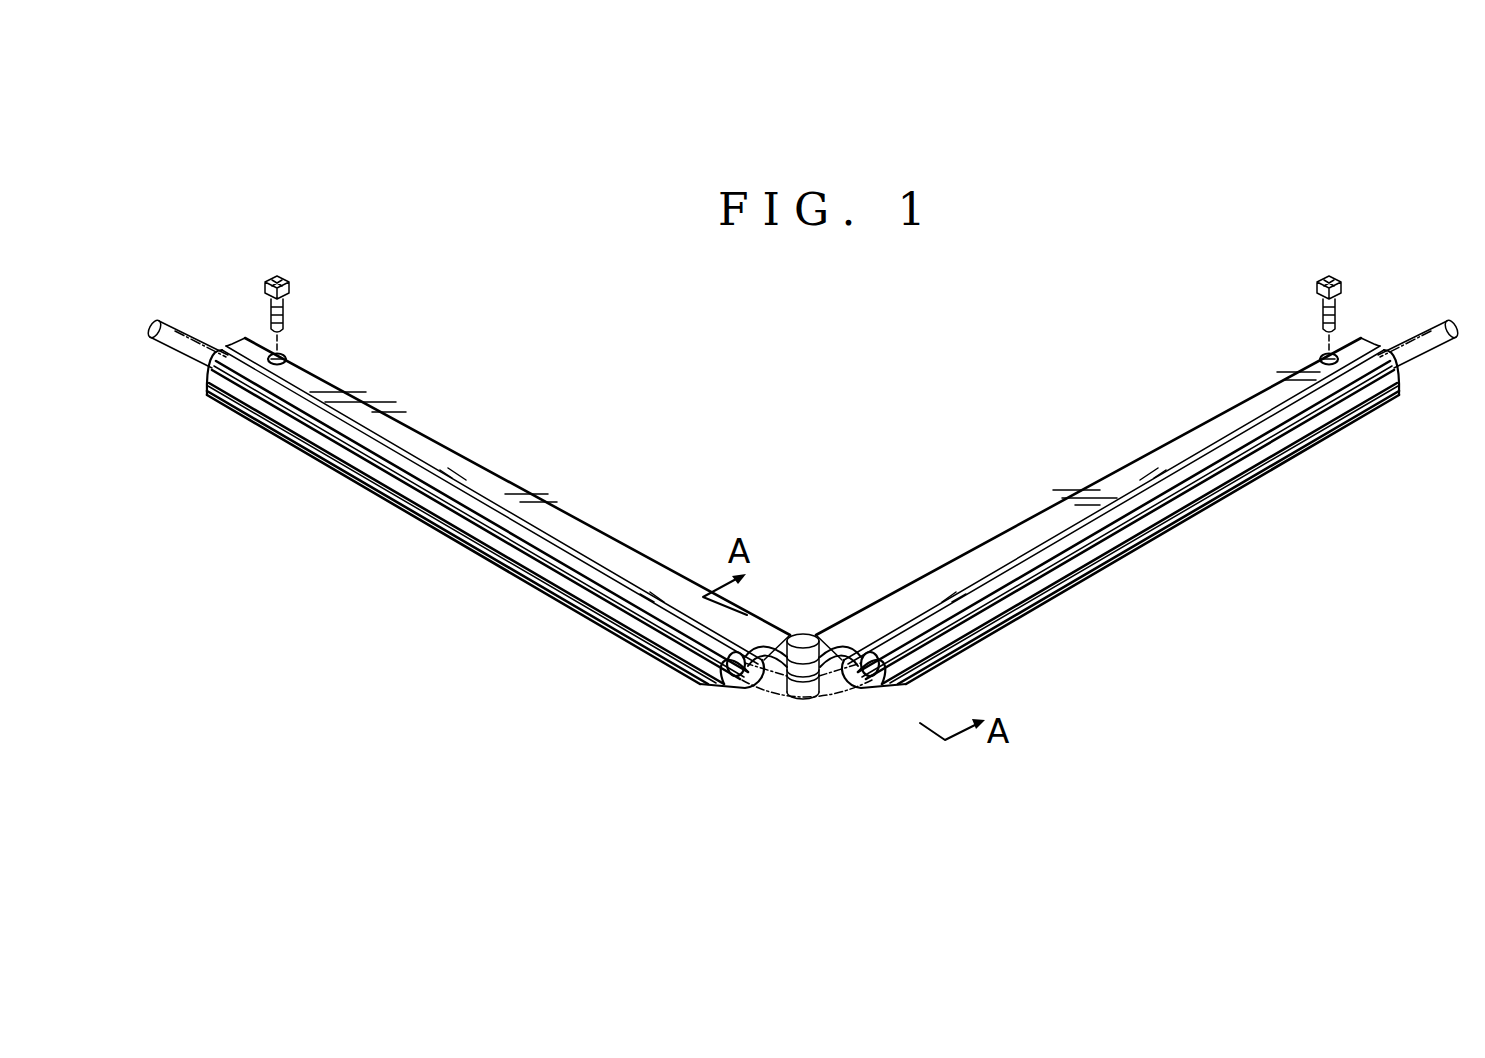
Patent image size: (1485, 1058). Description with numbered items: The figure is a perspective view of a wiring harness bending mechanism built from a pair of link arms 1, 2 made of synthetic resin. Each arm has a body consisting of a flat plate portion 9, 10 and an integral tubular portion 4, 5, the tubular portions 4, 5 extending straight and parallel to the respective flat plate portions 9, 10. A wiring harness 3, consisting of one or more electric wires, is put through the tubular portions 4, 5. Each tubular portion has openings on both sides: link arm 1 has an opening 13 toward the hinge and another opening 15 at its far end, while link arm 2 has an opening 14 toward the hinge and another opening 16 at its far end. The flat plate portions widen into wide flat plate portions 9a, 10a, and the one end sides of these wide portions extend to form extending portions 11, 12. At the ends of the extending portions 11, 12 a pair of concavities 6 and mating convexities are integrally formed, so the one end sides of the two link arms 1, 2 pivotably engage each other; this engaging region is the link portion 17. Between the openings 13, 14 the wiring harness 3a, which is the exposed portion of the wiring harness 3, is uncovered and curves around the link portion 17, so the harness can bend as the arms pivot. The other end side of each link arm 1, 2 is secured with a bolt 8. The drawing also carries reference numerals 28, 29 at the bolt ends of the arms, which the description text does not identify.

The link arm 1 is at (1138, 528).
The link arm 2 is at (468, 530).
The wiring harness 3 is at (1079, 537).
The wiring harness exposed portion 3a is at (818, 700).
The tubular portion 4 is at (1193, 460).
The tubular portion 5 is at (445, 470).
The concavity 6 is at (821, 631).
The bolt 8 is at (289, 283).
The flat plate portion 9 is at (1060, 578).
The wide flat plate portion 9a is at (936, 580).
The flat plate portion 10 is at (543, 570).
The wide flat plate portion 10a is at (657, 570).
The extending portion 11 is at (832, 648).
The extending portion 12 is at (801, 634).
The opening 13 is at (867, 682).
The opening 14 is at (738, 682).
The opening 15 is at (1396, 368).
The opening 16 is at (210, 368).
The link portion 17 is at (798, 706).
The right mounting hole 28 is at (1319, 355).
The left mounting hole 29 is at (287, 355).